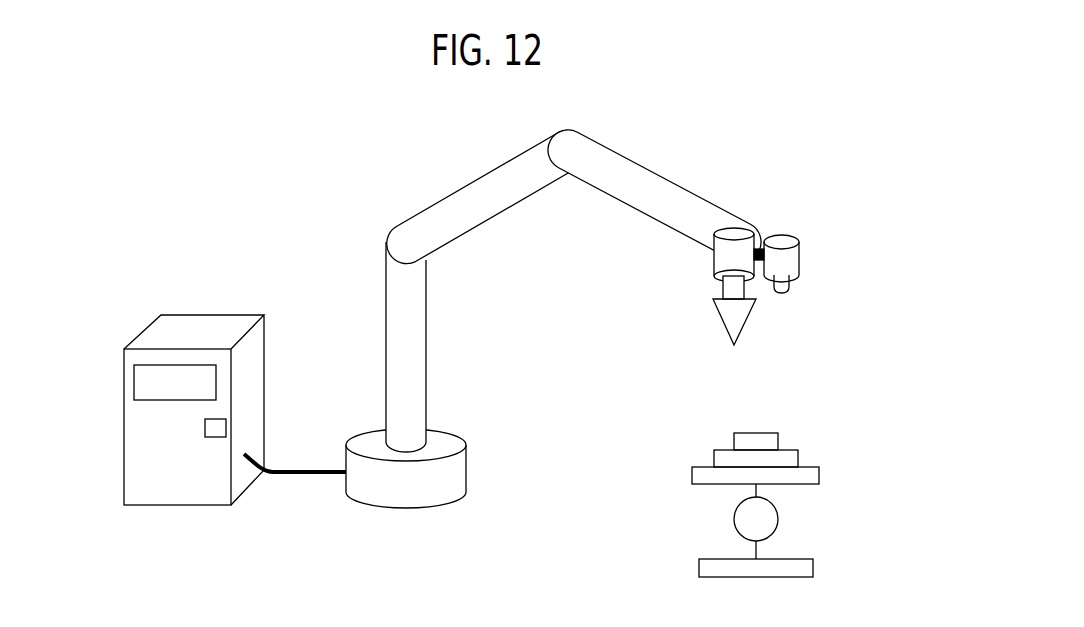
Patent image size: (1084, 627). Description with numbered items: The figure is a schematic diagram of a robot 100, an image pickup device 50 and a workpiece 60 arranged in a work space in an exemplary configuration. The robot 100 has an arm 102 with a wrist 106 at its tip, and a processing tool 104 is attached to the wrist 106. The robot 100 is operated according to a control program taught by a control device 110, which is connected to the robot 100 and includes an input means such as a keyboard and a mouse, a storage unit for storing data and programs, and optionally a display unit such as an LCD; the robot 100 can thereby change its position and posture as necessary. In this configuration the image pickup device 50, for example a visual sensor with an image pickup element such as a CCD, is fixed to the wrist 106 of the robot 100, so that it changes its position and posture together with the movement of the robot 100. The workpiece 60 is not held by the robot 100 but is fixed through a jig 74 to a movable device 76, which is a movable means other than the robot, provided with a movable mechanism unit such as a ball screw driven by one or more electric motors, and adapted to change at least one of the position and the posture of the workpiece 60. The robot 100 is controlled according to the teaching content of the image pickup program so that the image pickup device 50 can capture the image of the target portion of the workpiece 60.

The robot 100 is at (555, 303).
The arm 102 is at (658, 185).
The processing tool 104 is at (723, 323).
The wrist 106 is at (713, 258).
The control device 110 is at (186, 318).
The image pickup device 50 is at (798, 260).
The workpiece 60 is at (757, 430).
The jig 74 is at (818, 475).
The movable device 76 is at (747, 468).